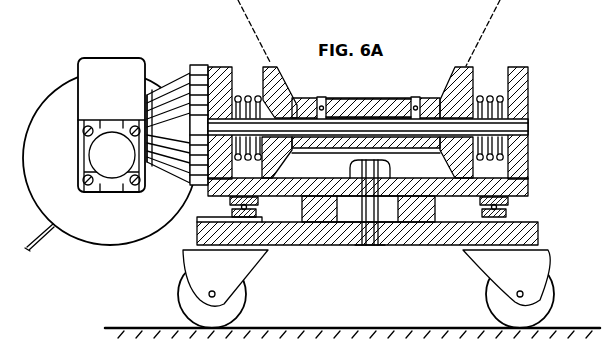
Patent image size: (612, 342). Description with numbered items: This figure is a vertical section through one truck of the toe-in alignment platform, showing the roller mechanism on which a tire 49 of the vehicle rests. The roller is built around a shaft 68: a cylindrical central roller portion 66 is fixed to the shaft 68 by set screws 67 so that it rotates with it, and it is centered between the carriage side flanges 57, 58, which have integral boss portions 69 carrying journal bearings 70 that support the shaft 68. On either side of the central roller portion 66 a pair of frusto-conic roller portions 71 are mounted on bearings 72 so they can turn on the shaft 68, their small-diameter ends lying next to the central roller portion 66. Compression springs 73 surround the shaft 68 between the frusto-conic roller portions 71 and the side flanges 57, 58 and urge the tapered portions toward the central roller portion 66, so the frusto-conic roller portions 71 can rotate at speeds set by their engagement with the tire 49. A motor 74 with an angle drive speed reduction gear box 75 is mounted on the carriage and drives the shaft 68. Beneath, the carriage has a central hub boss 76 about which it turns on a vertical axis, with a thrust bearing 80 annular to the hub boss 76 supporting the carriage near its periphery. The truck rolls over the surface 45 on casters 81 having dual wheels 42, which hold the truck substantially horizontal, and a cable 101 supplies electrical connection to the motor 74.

The wheels 42 is at (242, 305).
The surface 45 is at (324, 325).
The tire 49 is at (504, 6).
The carriage side flange 57 is at (527, 67).
The carriage side flange 58 is at (222, 67).
The cylindrical central roller portion 66 is at (360, 98).
The set screws 67 is at (322, 97).
The shaft 68 is at (528, 125).
The boss portions 69 is at (236, 95).
The journal bearings 70 is at (240, 95).
The frusto-conic roller portions 71 is at (275, 80).
The bearings 72 is at (300, 98).
The compression springs 73 is at (282, 163).
The motor 74 is at (58, 148).
The angle drive speed reduction gear box 75 is at (124, 164).
The central hub boss 76 is at (388, 240).
The thrust bearing 80 is at (230, 210).
The casters 81 is at (258, 275).
The cable 101 is at (48, 250).